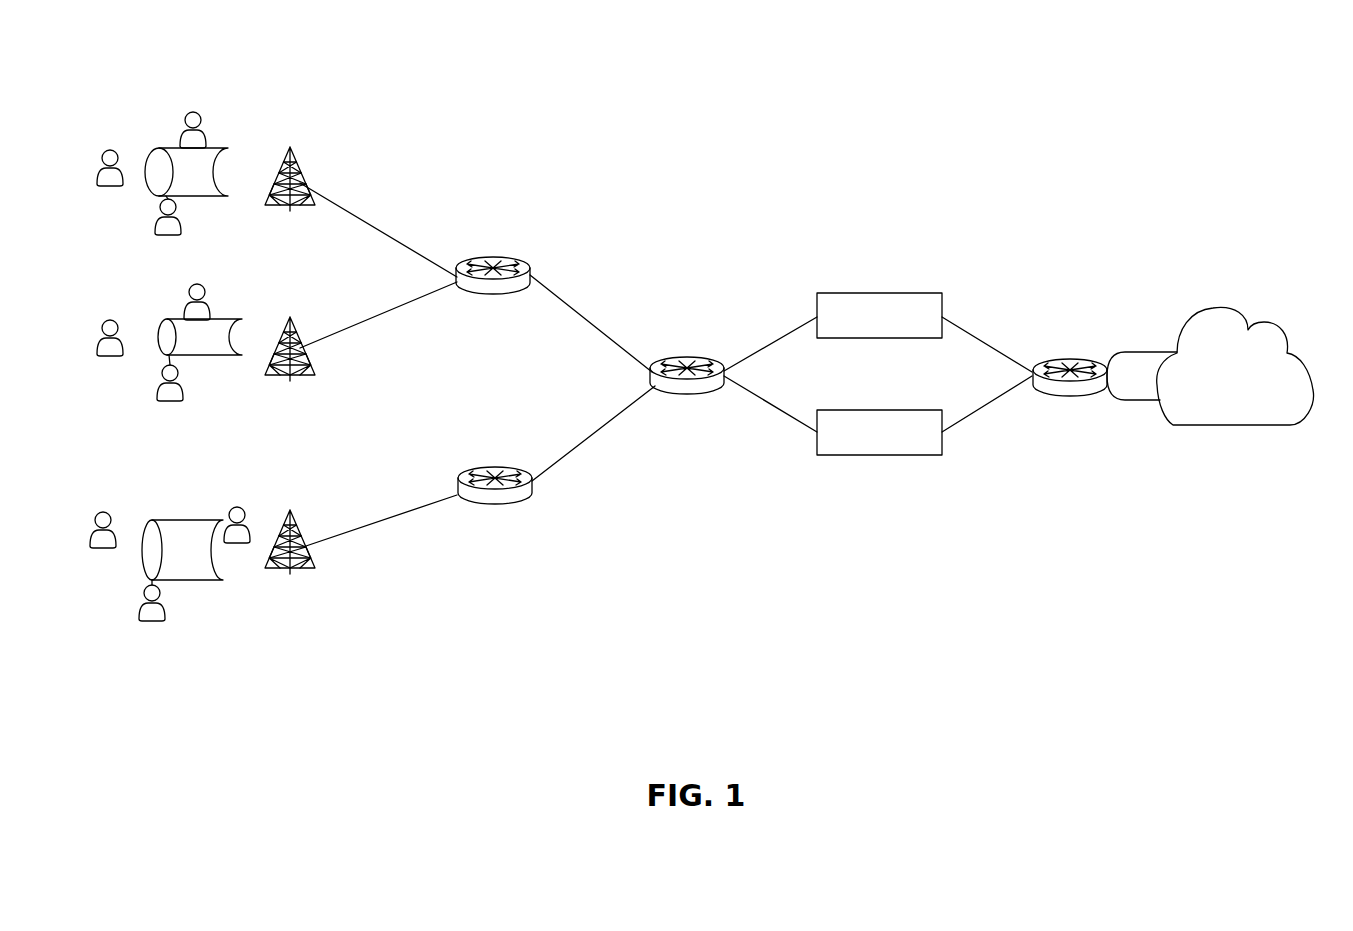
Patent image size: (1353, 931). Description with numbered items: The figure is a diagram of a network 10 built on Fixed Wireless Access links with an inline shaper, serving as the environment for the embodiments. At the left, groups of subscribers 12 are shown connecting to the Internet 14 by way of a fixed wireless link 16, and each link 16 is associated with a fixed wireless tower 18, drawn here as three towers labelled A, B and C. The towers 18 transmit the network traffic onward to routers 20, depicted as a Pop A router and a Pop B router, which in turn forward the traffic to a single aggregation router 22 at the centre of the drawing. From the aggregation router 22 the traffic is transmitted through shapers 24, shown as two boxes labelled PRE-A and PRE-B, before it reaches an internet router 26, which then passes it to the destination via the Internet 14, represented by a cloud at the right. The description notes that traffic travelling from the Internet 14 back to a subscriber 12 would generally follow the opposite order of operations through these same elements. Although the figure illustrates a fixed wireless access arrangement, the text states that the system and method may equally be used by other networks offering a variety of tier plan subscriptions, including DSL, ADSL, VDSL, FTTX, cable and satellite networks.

The network 10 is at (988, 522).
The subscribers 12 is at (160, 148).
The Internet 14 is at (1248, 327).
The fixed wireless link 16 is at (213, 148).
The fixed wireless tower 18 is at (296, 165).
The routers 20 is at (492, 257).
The aggregation router 22 is at (680, 357).
The shapers 24 is at (873, 293).
The internet router 26 is at (1068, 356).